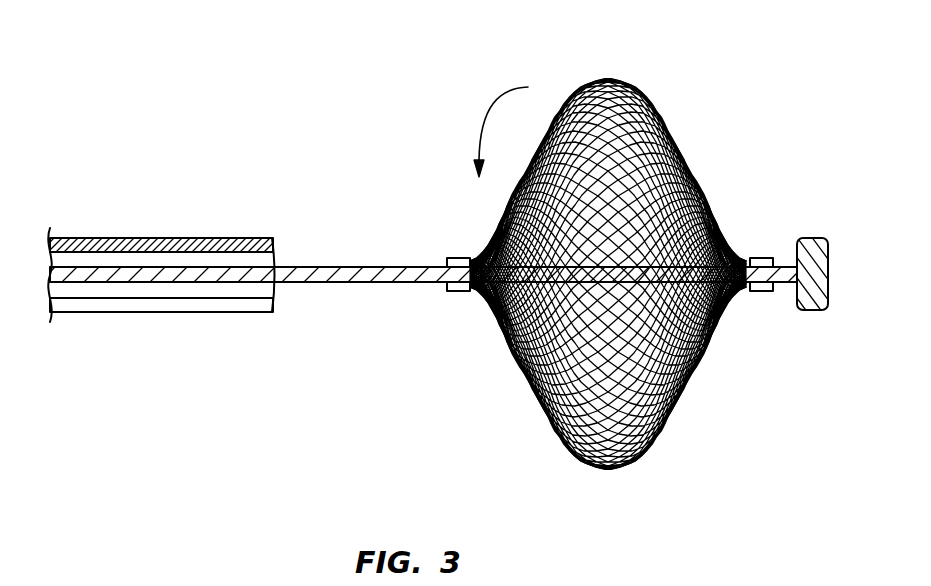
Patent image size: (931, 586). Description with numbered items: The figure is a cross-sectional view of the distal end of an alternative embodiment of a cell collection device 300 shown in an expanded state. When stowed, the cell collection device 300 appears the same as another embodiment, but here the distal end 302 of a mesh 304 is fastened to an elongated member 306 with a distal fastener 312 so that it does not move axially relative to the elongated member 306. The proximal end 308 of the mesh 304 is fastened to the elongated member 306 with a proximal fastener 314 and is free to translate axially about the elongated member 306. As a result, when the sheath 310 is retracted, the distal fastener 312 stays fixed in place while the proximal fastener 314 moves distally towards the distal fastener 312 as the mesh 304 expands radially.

The cell collection device 300 is at (351, 116).
The distal end 302 is at (725, 392).
The mesh 304 is at (542, 428).
The elongated member 306 is at (323, 266).
The proximal end 308 is at (454, 320).
The sheath 310 is at (148, 307).
The distal fastener 312 is at (757, 257).
The proximal fastener 314 is at (455, 257).